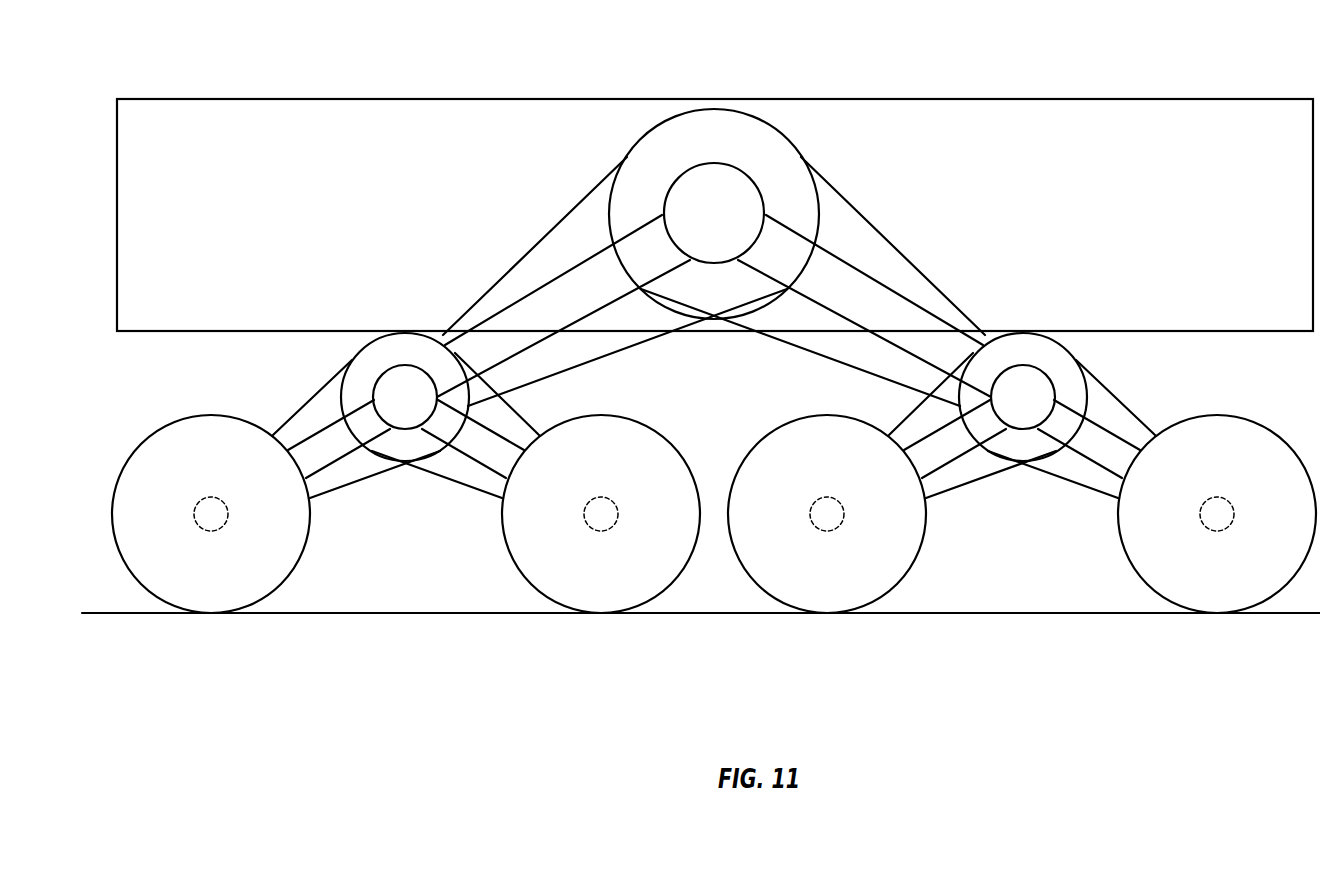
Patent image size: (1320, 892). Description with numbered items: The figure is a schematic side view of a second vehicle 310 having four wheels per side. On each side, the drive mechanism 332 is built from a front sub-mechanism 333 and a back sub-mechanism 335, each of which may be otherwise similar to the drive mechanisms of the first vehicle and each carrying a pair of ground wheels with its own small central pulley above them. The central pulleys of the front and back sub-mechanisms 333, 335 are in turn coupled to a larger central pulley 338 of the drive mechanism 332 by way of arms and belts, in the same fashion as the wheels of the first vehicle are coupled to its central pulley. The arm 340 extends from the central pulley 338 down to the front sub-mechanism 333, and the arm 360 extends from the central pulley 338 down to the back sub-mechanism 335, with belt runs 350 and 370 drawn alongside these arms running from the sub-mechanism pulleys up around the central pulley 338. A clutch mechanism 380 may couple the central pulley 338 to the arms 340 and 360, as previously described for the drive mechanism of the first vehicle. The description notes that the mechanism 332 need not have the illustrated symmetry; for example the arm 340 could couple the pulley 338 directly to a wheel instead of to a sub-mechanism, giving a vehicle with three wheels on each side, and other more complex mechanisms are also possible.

The vehicle 310 is at (193, 76).
The drive mechanism 332 is at (714, 626).
The front sub-mechanism 333 is at (406, 506).
The back sub-mechanism 335 is at (1022, 506).
The central pulley 338 is at (735, 150).
The arm 340 is at (562, 327).
The left belt segment 350 is at (552, 219).
The arm 360 is at (905, 329).
The right belt segment 370 is at (876, 218).
The clutch mechanism 380 is at (778, 149).